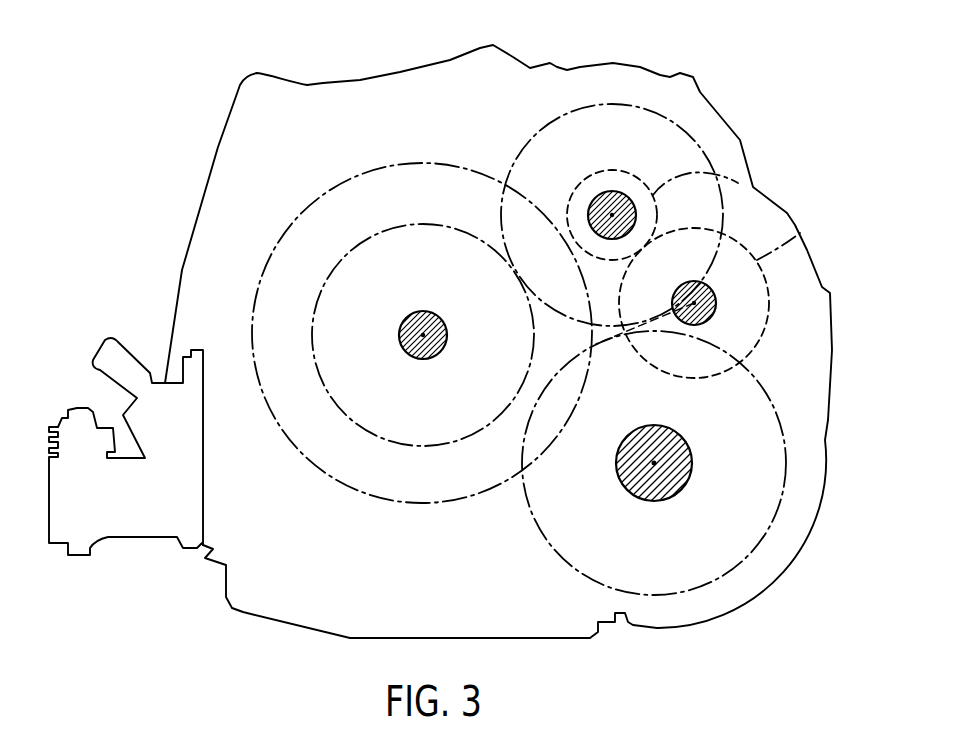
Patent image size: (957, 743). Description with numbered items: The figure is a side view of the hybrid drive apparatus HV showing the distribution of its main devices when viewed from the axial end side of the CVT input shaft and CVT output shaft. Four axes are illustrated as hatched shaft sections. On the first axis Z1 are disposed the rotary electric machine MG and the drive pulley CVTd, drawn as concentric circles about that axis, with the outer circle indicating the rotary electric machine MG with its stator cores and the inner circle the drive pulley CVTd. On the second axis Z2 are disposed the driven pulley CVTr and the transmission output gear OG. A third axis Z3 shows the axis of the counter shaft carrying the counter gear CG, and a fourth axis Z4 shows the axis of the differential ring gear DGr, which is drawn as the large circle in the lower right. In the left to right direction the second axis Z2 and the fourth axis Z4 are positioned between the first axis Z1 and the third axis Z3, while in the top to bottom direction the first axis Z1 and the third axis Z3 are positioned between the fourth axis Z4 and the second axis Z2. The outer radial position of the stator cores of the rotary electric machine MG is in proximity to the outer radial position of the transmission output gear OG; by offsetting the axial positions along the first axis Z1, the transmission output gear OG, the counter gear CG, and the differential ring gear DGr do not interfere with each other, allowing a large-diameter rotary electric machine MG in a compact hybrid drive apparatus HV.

The hybrid drive apparatus HV is at (218, 147).
The rotary electric machine MG is at (310, 462).
The drive pulley CVTd is at (420, 447).
The driven pulley CVTr is at (540, 110).
The differential ring gear DGr is at (548, 560).
The counter gear CG is at (757, 260).
The transmission output gear OG is at (712, 172).
The first axis Z1 is at (423, 335).
The second axis Z2 is at (612, 215).
The third axis Z3 is at (694, 303).
The fourth axis Z4 is at (654, 463).